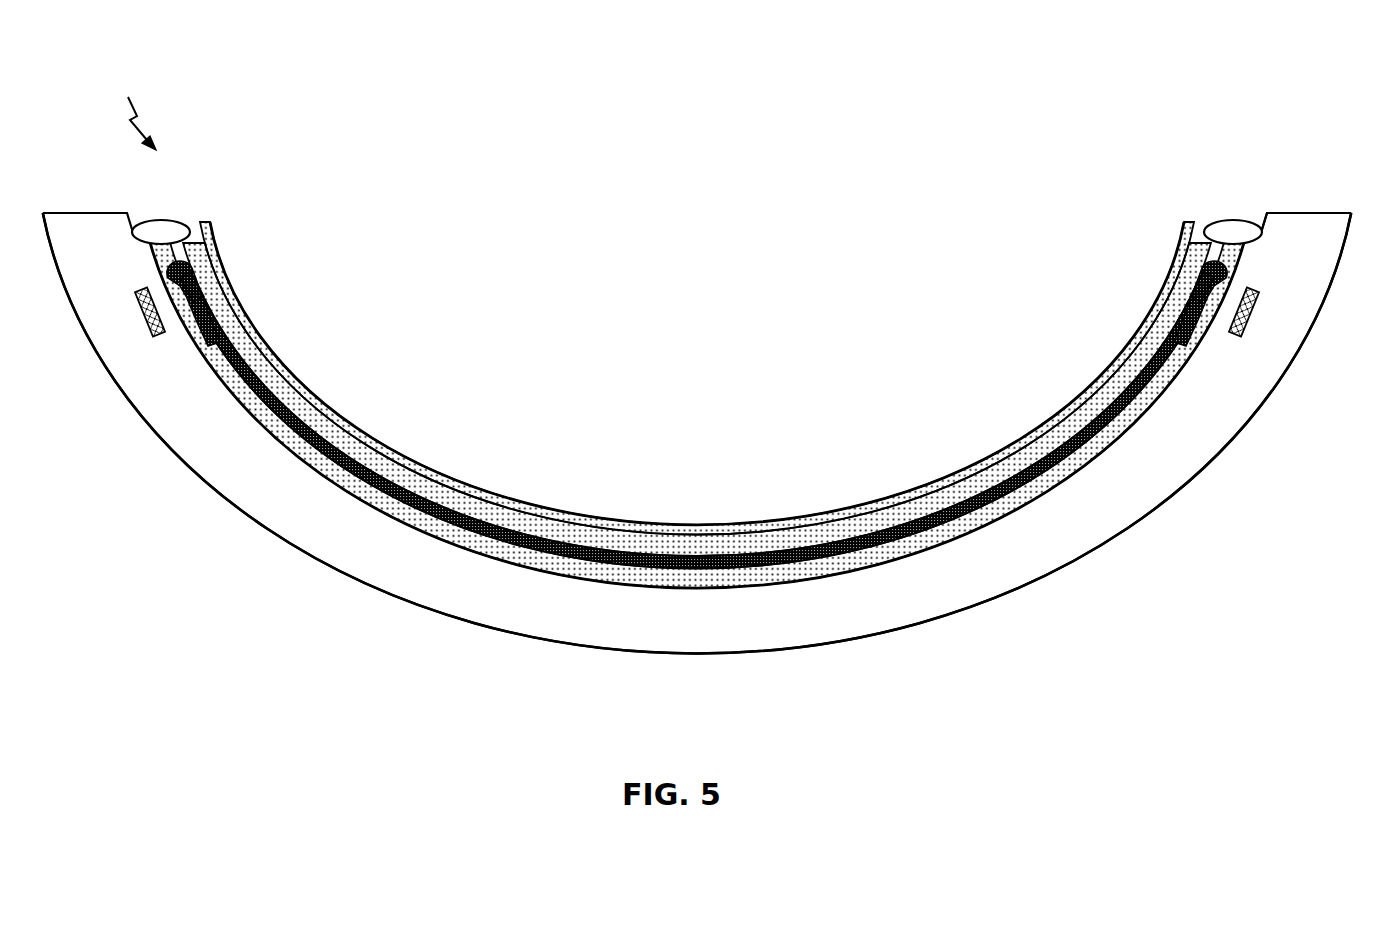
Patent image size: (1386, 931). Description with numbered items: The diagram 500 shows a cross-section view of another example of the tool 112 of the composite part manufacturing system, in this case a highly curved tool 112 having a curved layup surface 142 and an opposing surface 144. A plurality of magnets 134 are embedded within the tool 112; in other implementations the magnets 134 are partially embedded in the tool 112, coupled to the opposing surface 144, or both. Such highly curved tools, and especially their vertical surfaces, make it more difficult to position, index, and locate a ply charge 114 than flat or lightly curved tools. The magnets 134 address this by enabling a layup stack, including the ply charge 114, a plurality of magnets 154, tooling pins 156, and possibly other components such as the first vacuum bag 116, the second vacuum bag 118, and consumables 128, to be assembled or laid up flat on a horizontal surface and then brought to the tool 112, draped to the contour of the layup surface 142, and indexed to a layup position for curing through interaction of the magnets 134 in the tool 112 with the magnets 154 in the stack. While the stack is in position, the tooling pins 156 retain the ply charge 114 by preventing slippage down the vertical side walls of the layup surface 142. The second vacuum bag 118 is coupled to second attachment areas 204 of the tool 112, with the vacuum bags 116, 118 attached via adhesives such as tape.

The diagram 500 is at (122, 110).
The tool 112 is at (1293, 213).
The ply charge 114 is at (1060, 454).
The first vacuum bag 116 is at (985, 503).
The second vacuum bag 118 is at (817, 515).
The consumables 128 is at (1077, 417).
The magnets 134 is at (153, 314).
The layup surface 142 is at (1265, 228).
The opposing surface 144 is at (1197, 470).
The magnets 154 is at (195, 314).
The tooling pins 156 is at (196, 286).
The second attachment areas 204 is at (165, 222).